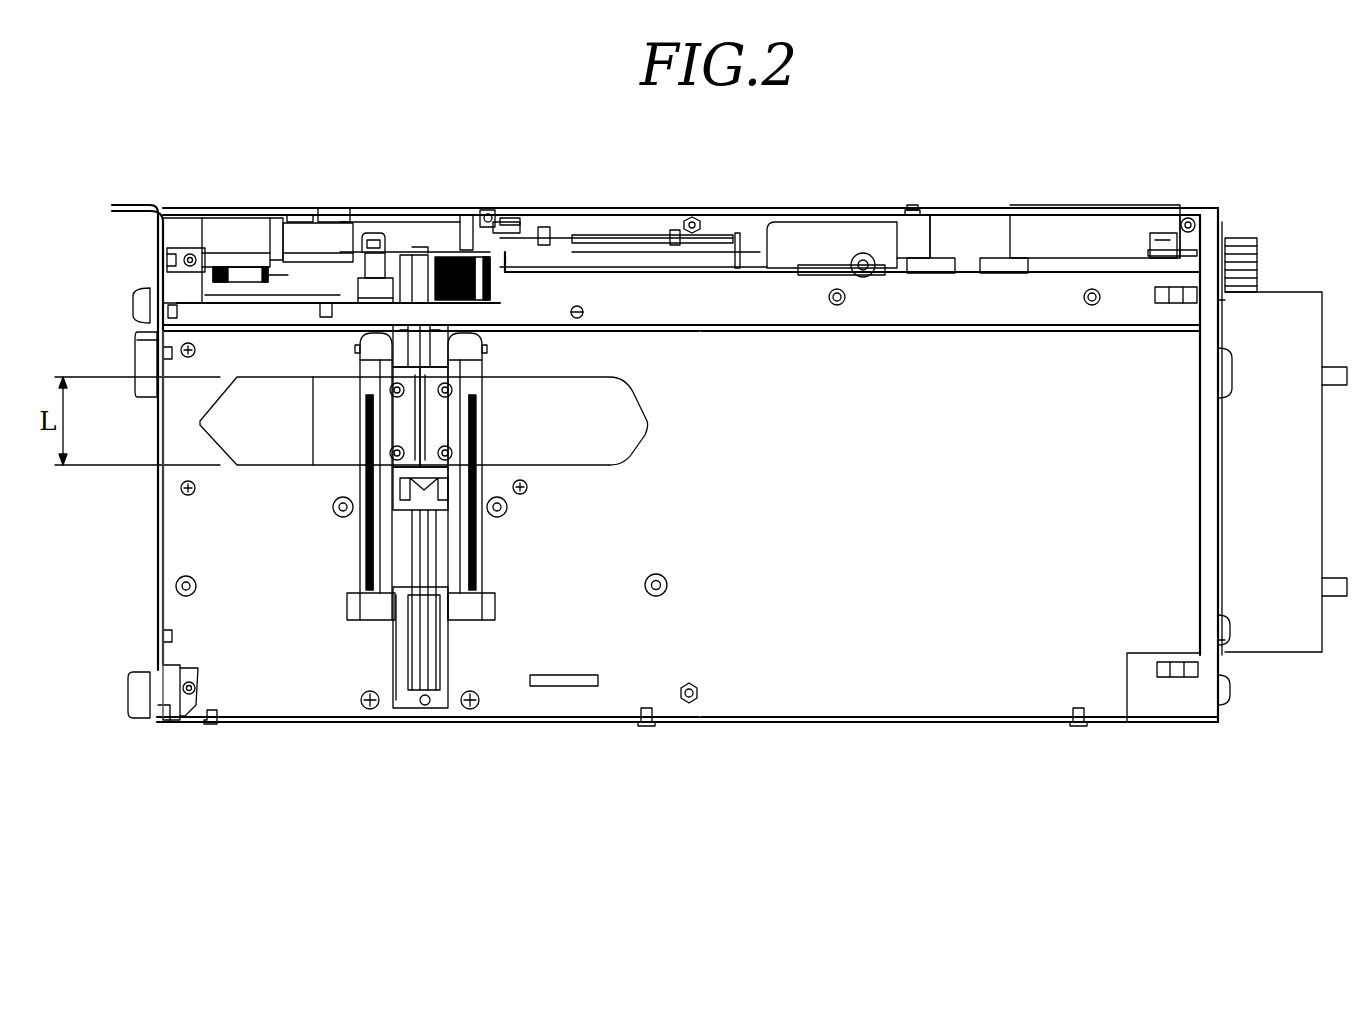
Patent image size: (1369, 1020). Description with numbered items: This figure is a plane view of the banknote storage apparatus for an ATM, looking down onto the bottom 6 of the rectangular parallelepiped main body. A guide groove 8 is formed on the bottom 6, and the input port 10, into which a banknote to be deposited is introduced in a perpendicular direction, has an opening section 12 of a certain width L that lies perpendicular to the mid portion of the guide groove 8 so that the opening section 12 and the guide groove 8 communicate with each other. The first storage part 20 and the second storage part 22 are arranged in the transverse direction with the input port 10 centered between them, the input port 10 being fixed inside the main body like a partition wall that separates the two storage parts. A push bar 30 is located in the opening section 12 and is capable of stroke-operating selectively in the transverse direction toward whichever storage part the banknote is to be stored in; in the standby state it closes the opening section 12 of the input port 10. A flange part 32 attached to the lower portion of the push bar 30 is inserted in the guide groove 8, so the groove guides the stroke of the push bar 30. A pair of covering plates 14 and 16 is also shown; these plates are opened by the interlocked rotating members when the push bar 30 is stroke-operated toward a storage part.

The bottom 6 is at (962, 698).
The guide groove 8 is at (548, 388).
The input port 10 is at (408, 700).
The opening section 12 is at (372, 378).
The covering plate 14 is at (402, 553).
The covering plate 16 is at (440, 554).
The first storage part 20 is at (209, 537).
The second storage part 22 is at (798, 486).
The push bar 30 is at (418, 429).
The flange part 32 is at (445, 430).